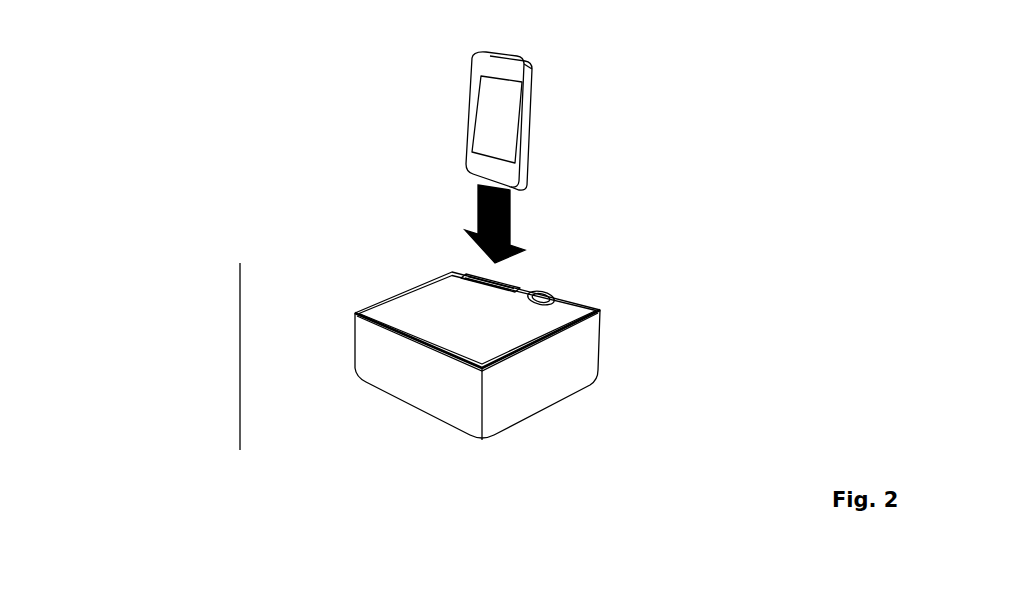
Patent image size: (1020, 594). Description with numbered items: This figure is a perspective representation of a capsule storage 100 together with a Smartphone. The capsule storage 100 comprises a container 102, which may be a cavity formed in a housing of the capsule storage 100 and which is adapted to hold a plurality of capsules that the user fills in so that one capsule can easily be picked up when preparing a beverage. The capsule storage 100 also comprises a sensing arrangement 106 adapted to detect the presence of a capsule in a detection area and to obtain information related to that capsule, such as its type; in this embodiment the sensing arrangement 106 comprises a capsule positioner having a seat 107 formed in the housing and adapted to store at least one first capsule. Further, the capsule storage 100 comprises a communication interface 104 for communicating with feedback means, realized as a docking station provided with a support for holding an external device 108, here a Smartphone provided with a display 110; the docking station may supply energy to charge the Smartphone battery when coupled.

The capsule storage 100 is at (240, 379).
The container 102 is at (438, 325).
The communication interface 104 is at (492, 283).
The sensing arrangement 106 is at (545, 308).
The seat 107 is at (550, 302).
The external device 108 is at (498, 67).
The display 110 is at (503, 123).